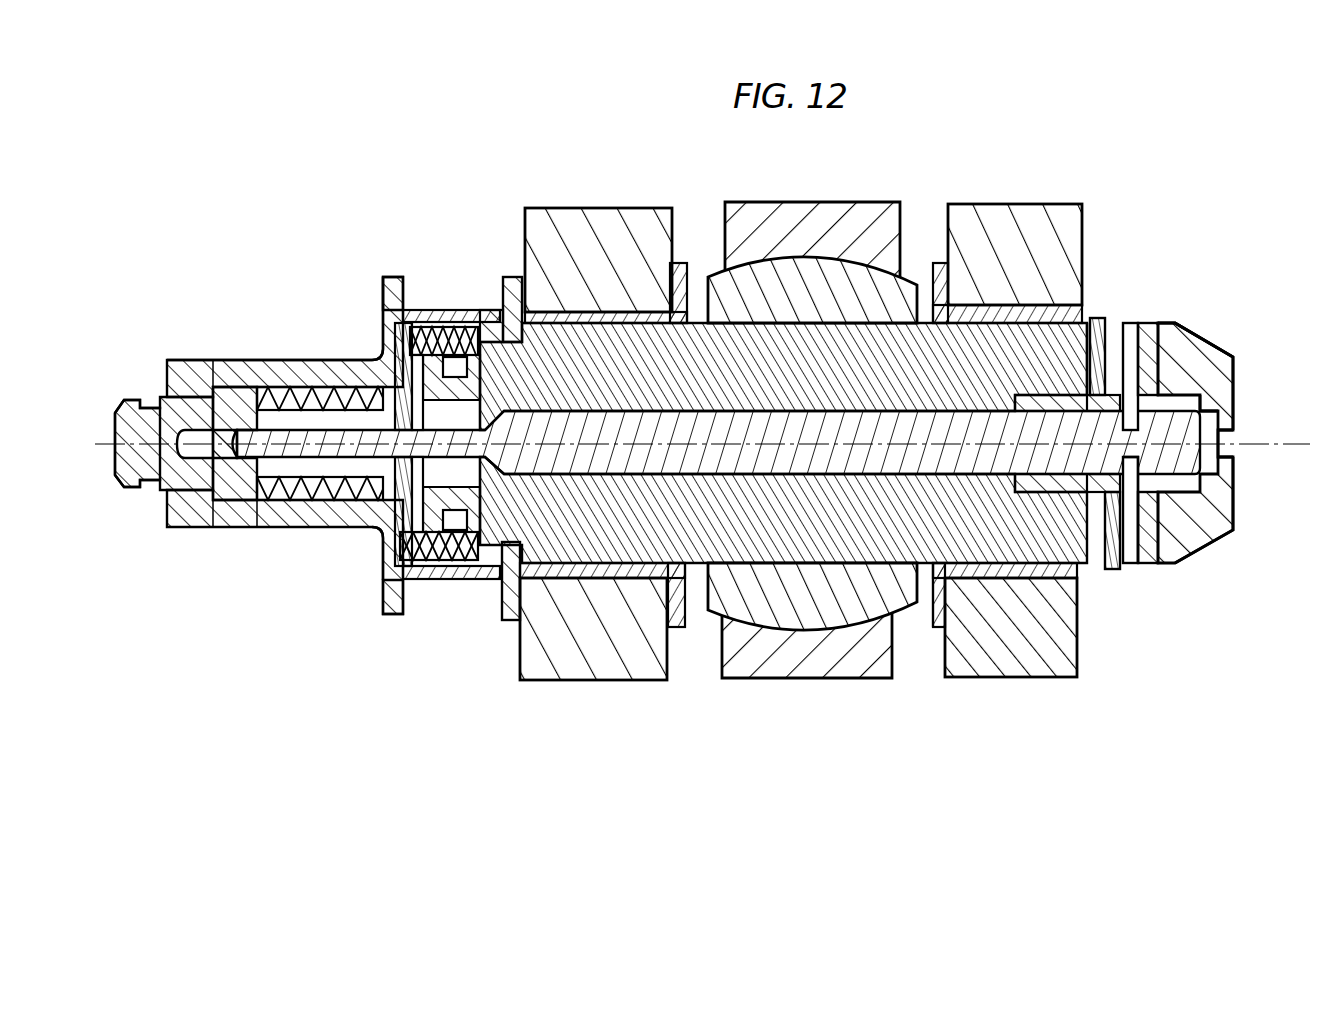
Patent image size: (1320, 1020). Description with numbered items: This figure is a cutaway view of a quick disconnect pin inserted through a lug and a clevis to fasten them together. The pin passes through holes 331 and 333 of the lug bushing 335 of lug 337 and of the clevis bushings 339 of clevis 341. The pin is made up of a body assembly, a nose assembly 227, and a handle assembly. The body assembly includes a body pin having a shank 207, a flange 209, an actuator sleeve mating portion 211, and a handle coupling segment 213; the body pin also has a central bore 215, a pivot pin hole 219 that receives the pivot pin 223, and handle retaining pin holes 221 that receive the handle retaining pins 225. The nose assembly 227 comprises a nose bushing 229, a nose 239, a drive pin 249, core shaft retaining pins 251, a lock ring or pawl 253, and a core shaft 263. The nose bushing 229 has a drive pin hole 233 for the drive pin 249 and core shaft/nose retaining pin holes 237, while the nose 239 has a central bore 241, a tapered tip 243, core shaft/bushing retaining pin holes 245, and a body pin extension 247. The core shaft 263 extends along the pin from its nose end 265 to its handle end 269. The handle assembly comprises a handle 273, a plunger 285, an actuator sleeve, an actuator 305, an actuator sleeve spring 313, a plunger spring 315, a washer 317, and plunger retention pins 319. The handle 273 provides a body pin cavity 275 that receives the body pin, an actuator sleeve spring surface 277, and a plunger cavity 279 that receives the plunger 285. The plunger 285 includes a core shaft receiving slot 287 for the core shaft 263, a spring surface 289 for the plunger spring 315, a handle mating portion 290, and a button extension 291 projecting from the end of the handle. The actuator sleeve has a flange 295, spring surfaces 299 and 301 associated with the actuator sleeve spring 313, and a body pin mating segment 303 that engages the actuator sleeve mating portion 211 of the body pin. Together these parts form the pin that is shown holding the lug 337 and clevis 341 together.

The shank 207 is at (928, 566).
The flange 209 is at (505, 622).
The actuator sleeve mating portion 211 is at (490, 586).
The handle coupling segment 213 is at (378, 540).
The central bore 215 is at (698, 566).
The pivot pin hole 219 is at (1060, 500).
The handle retaining pin holes 221 is at (436, 326).
The pivot pin 223 is at (1046, 566).
The handle retaining pins 225 is at (460, 356).
The nose assembly 227 is at (1205, 326).
The nose bushing 229 is at (1143, 566).
The drive pin hole 233 is at (1130, 324).
The core shaft/nose retaining pin holes 237 is at (1210, 346).
The nose 239 is at (1240, 508).
The central bore 241 is at (1232, 413).
The tapered tip 243 is at (1232, 358).
The core shaft/bushing retaining pin holes 245 is at (1160, 398).
The body pin extension 247 is at (1040, 318).
The drive pin 249 is at (1150, 322).
The core shaft retaining pins 251 is at (1100, 318).
The lock ring (pawl) 253 is at (1096, 322).
The core shaft 263 is at (832, 452).
The nose end 265 is at (1230, 445).
The handle end 269 is at (205, 530).
The handle 273 is at (212, 348).
The body pin cavity 275 is at (472, 330).
The actuator sleeve spring surface 277 is at (425, 310).
The plunger cavity 279 is at (300, 388).
The plunger 285 is at (102, 469).
The core shaft receiving slot 287 is at (170, 500).
The spring surface 289 is at (272, 386).
The handle mating portion 290 is at (170, 362).
The button extension 291 is at (112, 423).
The flange 295 is at (390, 278).
The spring surface 299 is at (451, 354).
The spring surface 301 is at (510, 278).
The body pin mating segment 303 is at (488, 310).
The actuator 305 is at (345, 528).
The actuator sleeve spring 313 is at (470, 580).
The plunger spring 315 is at (280, 530).
The washer 317 is at (330, 388).
The plunger retention pins 319 is at (195, 362).
The hole 331 is at (815, 300).
The hole 333 is at (688, 305).
The lug bushing 335 is at (770, 612).
The lug 337 is at (868, 680).
The clevis bushings 339 is at (678, 630).
The clevis 341 is at (606, 666).